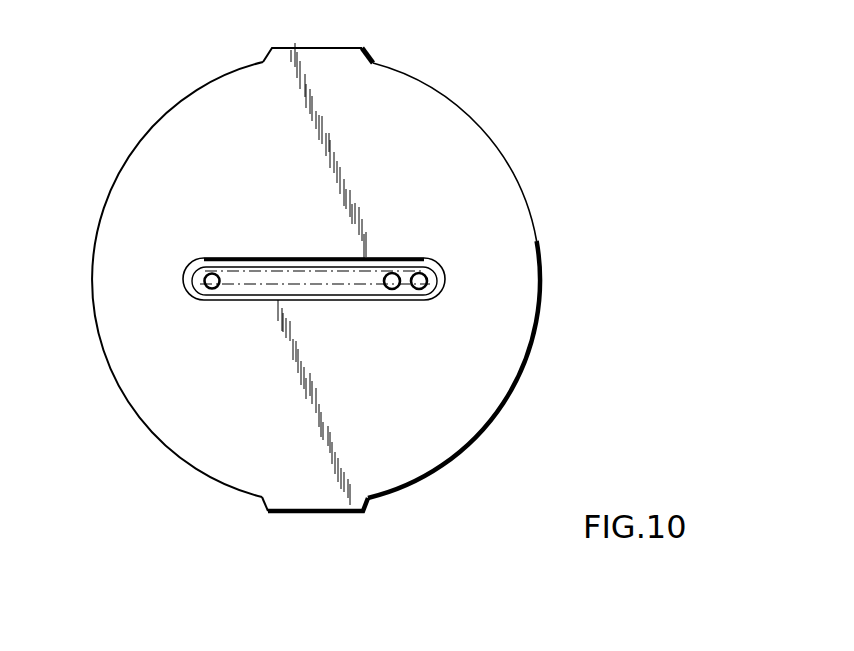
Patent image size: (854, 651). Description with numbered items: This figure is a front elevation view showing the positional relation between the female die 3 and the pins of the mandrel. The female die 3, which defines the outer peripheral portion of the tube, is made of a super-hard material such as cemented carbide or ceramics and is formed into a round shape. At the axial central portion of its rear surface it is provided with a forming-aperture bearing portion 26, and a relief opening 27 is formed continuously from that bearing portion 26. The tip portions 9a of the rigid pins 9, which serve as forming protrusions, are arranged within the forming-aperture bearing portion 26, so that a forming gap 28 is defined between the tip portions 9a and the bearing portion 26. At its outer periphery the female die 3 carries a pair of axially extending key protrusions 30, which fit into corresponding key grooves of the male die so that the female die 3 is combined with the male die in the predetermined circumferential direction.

The female die 3 is at (530, 212).
The key protrusions 30 is at (340, 47).
The relief opening 27 is at (197, 258).
The rigid pins 9 is at (272, 262).
The tip portions 9a is at (208, 287).
The forming-aperture bearing portion 26 is at (361, 288).
The forming gap 28 is at (404, 288).